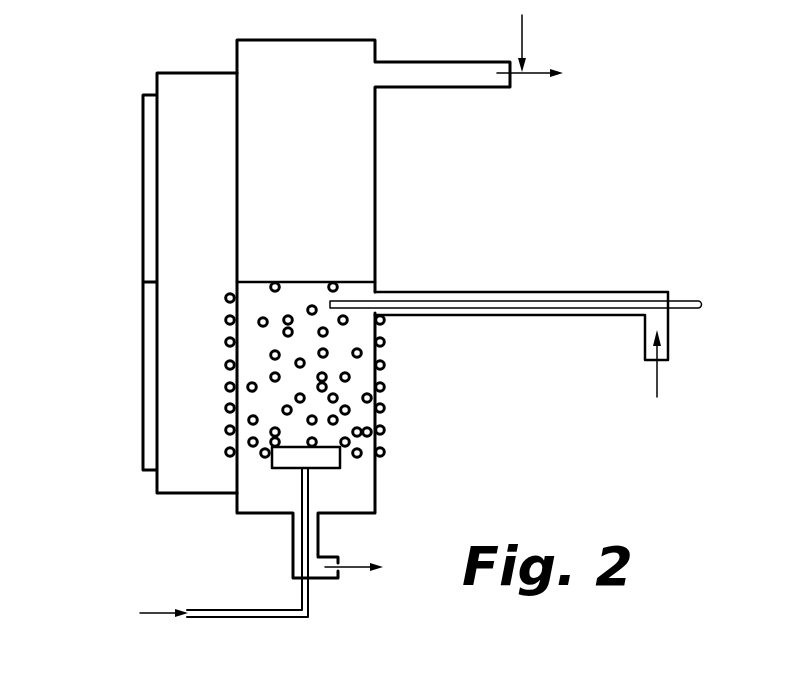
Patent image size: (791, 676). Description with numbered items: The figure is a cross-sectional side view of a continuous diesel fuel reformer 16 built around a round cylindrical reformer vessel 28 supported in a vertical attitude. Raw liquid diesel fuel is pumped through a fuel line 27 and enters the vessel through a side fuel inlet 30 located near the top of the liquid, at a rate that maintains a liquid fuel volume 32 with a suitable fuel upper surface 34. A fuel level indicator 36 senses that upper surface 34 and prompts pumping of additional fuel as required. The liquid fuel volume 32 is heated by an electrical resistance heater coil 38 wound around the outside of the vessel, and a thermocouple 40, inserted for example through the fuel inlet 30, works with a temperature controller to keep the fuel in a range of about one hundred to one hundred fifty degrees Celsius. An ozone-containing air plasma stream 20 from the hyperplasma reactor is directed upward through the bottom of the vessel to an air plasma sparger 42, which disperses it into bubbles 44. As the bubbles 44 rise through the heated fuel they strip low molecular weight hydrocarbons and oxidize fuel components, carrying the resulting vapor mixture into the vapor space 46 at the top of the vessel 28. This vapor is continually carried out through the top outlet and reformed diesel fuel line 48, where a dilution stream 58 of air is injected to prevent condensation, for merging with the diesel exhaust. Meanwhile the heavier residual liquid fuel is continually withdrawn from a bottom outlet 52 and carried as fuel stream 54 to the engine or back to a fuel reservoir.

The diesel fuel reformer 16 is at (430, 191).
The air plasma stream 20 is at (152, 612).
The fuel line 27 is at (653, 380).
The reformer vessel 28 is at (375, 148).
The fuel inlet 30 is at (420, 292).
The liquid fuel volume 32 is at (325, 370).
The fuel upper surface 34 is at (303, 282).
The fuel level indicator 36 is at (148, 138).
The heater coil 38 is at (383, 432).
The thermocouple 40 is at (683, 300).
The air plasma sparger 42 is at (333, 462).
The bubbles 44 is at (284, 408).
The vapor space 46 is at (302, 154).
The reformed diesel fuel line 48 is at (530, 75).
The bottom outlet 52 is at (330, 573).
The fuel stream 54 is at (358, 558).
The dilution stream 58 is at (523, 32).